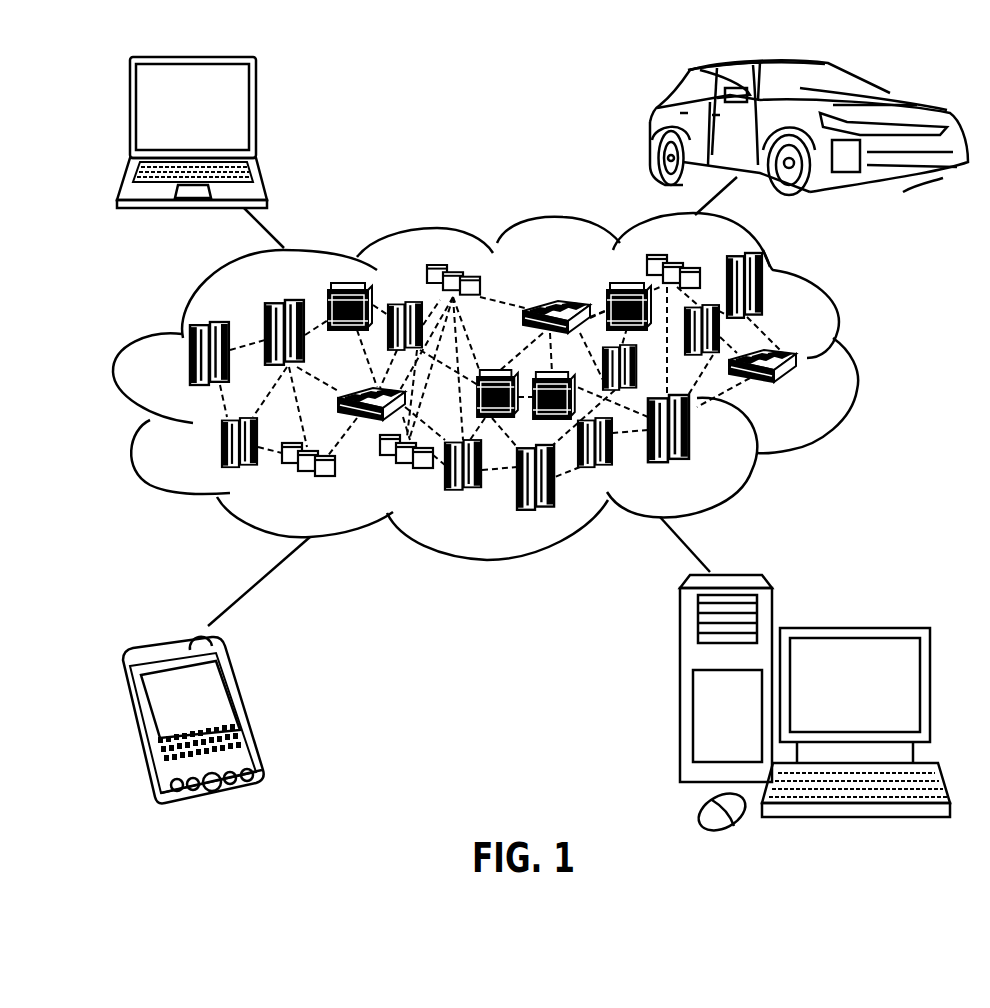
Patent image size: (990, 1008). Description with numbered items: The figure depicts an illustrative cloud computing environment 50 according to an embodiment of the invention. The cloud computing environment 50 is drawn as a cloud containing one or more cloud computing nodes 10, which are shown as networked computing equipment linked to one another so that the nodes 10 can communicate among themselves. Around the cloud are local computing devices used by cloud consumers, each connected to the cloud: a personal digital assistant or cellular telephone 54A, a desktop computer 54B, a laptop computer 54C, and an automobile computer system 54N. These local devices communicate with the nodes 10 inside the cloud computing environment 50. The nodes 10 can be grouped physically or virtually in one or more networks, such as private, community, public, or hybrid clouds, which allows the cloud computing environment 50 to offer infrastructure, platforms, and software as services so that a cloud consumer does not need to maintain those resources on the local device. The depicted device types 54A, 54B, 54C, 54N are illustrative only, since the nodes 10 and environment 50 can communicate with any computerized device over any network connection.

The cloud computing nodes 10 is at (812, 393).
The cloud computing environment 50 is at (855, 360).
The personal digital assistant (PDA) or cellular telephone 54A is at (247, 710).
The desktop computer 54B is at (852, 625).
The laptop computer 54C is at (255, 114).
The automobile computer system 54N is at (653, 127).